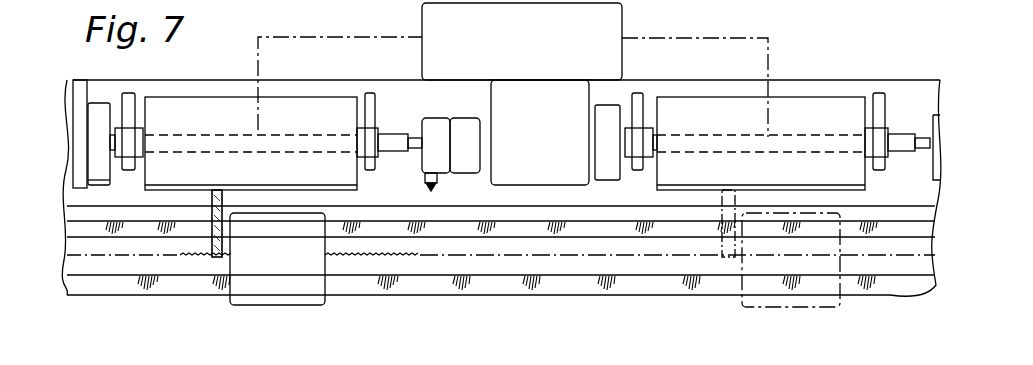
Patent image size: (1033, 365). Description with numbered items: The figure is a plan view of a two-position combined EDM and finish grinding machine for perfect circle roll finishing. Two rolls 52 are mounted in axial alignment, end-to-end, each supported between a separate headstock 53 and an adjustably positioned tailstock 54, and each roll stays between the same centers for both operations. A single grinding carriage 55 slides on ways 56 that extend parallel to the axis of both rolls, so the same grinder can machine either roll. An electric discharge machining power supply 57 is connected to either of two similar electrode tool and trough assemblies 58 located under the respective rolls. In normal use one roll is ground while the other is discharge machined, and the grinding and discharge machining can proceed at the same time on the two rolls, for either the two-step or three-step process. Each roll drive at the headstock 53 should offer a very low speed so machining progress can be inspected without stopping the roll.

The roll 52 is at (283, 97).
The headstock 53 is at (97, 73).
The tailstock 54 is at (433, 124).
The grinding carriage 55 is at (282, 300).
The ways 56 is at (404, 229).
The electric discharge machining power supply 57 is at (620, 27).
The electrode tool and trough assembly 58 is at (290, 136).